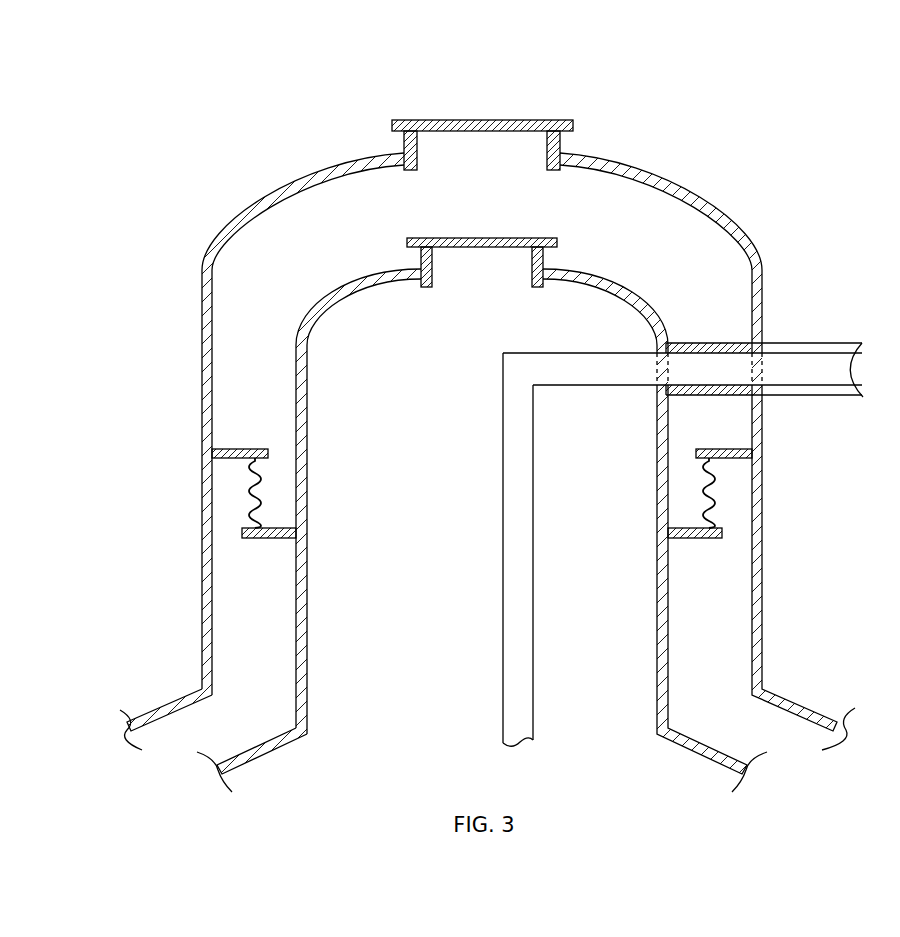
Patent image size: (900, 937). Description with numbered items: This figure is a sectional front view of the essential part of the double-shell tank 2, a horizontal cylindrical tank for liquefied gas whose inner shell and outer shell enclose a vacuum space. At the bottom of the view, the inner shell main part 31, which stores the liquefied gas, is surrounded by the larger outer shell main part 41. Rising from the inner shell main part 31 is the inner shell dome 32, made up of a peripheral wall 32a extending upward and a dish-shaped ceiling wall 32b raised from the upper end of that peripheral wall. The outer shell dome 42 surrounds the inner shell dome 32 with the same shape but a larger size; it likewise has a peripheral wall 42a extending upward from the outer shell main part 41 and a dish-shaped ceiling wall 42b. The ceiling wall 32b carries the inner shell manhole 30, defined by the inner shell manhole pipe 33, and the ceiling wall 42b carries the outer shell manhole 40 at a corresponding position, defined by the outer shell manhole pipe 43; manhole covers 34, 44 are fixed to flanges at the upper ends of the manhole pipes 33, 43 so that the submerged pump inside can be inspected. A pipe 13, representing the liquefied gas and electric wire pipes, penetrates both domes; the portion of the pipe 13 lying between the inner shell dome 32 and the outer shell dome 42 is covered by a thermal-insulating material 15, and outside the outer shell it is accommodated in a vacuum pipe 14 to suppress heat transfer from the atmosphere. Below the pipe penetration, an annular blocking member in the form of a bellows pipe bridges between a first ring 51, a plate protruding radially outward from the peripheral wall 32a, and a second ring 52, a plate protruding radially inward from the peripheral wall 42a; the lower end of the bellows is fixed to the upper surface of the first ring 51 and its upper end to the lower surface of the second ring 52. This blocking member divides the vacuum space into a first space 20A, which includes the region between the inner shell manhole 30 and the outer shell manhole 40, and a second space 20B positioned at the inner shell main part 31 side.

The double-shell tank 2 is at (276, 168).
The first space 20A is at (372, 203).
The second space 20B is at (248, 598).
The outer shell manhole 40 is at (413, 148).
The manhole cover 44 is at (505, 120).
The outer shell manhole pipe 43 is at (562, 150).
The inner shell manhole 30 is at (432, 268).
The manhole cover 34 is at (517, 238).
The inner shell manhole pipe 33 is at (545, 262).
The outer shell dome 42 is at (118, 140).
The peripheral wall 42a is at (205, 250).
The ceiling wall 42b is at (240, 205).
The outer shell main part 41 is at (175, 698).
The inner shell dome 32 is at (270, 215).
The peripheral wall 32a is at (298, 333).
The ceiling wall 32b is at (353, 282).
The inner shell main part 31 is at (258, 742).
The thermal-insulating material 15 is at (703, 343).
The vacuum pipe 14 is at (790, 343).
The pipe 13 is at (503, 673).
The second ring 52 is at (240, 449).
The first ring 51 is at (282, 524).